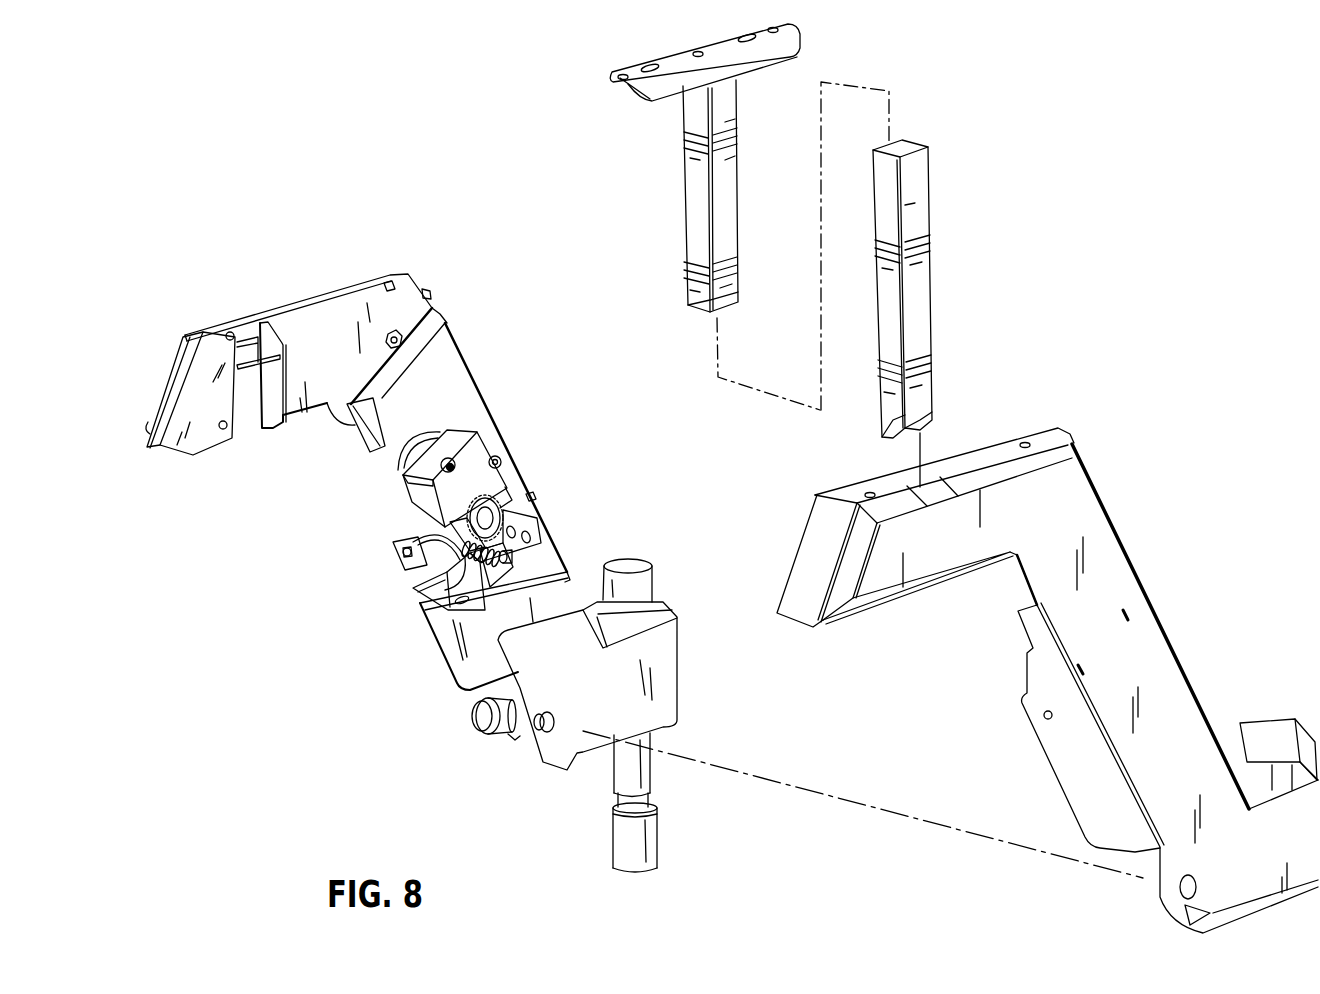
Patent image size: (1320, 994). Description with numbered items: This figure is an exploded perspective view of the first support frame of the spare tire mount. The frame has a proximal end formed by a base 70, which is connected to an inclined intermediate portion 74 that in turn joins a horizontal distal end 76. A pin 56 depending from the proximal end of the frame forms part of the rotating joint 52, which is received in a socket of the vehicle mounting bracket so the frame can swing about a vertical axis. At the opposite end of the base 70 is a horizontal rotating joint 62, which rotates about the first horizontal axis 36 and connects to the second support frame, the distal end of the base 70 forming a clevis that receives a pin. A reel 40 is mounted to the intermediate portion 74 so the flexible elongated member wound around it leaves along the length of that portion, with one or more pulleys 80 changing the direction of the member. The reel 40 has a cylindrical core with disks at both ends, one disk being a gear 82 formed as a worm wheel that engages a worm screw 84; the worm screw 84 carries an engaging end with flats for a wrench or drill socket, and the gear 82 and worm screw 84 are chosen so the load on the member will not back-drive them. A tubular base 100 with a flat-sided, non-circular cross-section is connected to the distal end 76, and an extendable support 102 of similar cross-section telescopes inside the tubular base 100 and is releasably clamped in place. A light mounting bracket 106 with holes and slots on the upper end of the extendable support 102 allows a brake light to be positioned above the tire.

The first horizontal axis 36 is at (848, 803).
The reel 40 is at (418, 538).
The rotating joint 52 is at (612, 775).
The pin 56 is at (650, 838).
The horizontal rotating joint 62 is at (494, 722).
The base 70 is at (670, 672).
The intermediate portion 74 is at (496, 432).
The distal end 76 is at (320, 322).
The pulleys 80 is at (436, 440).
The gear 82 is at (489, 536).
The worm screw 84 is at (445, 580).
The tubular base 100 is at (920, 187).
The extendable support 102 is at (690, 152).
The mounting bracket 106 is at (798, 38).